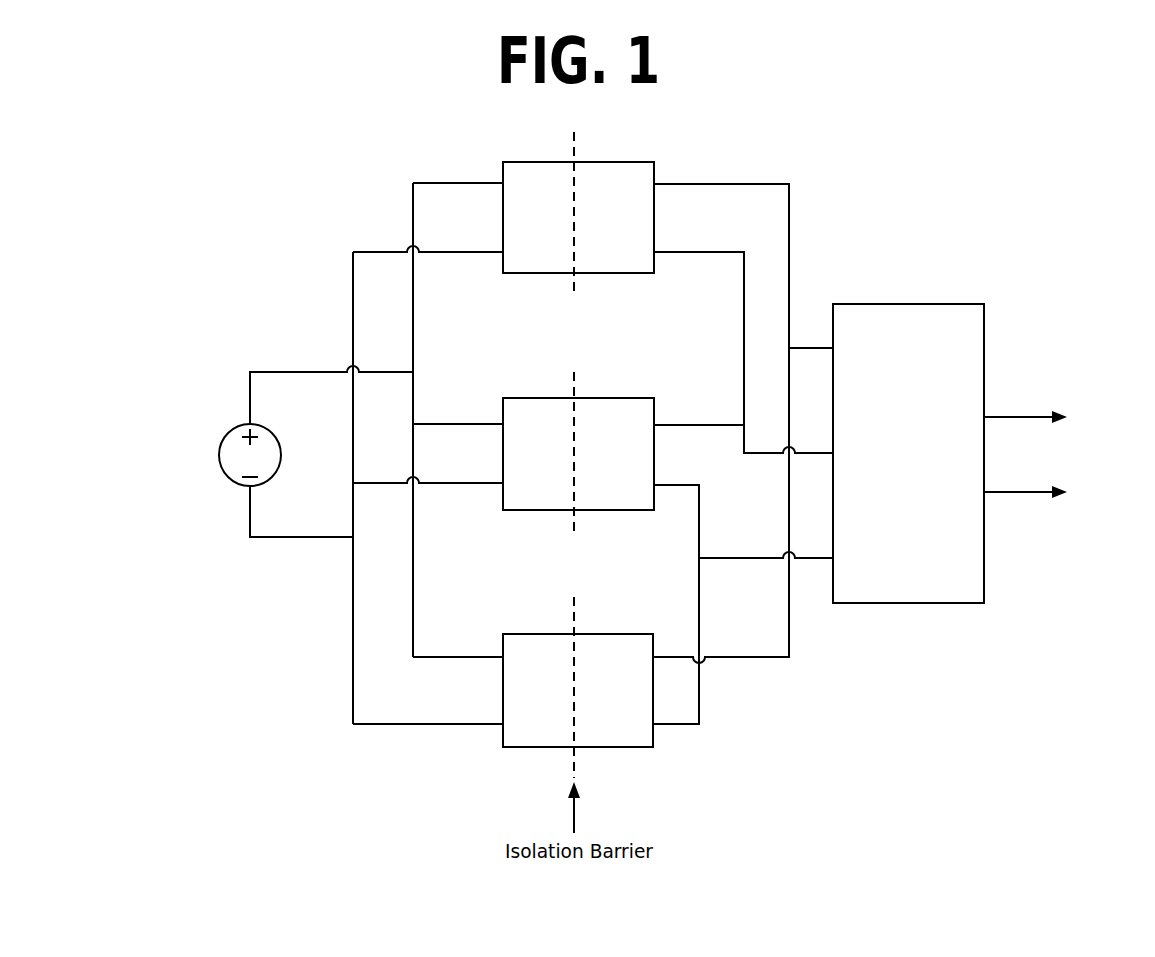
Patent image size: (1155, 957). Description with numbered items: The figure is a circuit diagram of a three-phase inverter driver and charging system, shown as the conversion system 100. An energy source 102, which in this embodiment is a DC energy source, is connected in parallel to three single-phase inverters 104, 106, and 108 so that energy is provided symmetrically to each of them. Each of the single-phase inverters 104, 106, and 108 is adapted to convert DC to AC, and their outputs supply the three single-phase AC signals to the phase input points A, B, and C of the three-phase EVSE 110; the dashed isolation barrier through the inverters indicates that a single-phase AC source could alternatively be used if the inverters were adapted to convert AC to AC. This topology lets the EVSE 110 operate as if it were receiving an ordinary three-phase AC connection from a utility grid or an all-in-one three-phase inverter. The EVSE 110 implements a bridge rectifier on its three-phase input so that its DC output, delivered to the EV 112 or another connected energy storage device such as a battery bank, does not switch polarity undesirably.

The conversion system 100 is at (333, 198).
The energy source 102 is at (231, 455).
The single-phase inverter 104 is at (562, 229).
The single-phase inverter 106 is at (562, 466).
The single-phase inverter 108 is at (561, 702).
The EVSE 110 is at (892, 466).
The EV 112 is at (1054, 454).